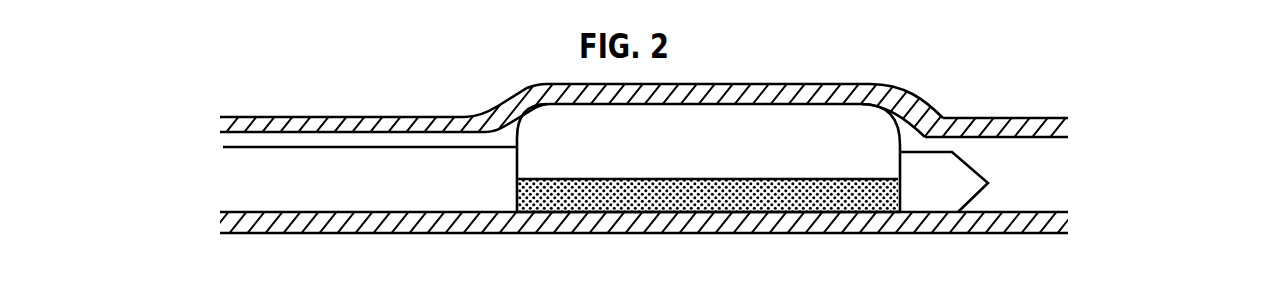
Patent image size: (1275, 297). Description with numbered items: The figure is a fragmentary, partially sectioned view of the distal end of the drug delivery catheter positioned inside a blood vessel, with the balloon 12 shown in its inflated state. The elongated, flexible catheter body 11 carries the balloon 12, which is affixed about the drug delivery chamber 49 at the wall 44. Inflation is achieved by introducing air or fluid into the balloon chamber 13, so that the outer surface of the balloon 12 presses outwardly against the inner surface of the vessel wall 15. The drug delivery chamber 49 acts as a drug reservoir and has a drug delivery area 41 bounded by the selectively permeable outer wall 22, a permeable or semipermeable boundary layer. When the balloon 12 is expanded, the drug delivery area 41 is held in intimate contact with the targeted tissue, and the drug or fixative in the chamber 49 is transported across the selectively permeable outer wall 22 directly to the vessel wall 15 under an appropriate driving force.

The catheter body 11 is at (408, 147).
The balloon 12 is at (790, 85).
The balloon chamber 13 is at (850, 125).
The vessel wall 15 is at (317, 118).
The selectively permeable outer wall 22 is at (852, 217).
The drug delivery area 41 is at (668, 218).
The wall 44 is at (575, 179).
The drug delivery chamber 49 is at (758, 207).